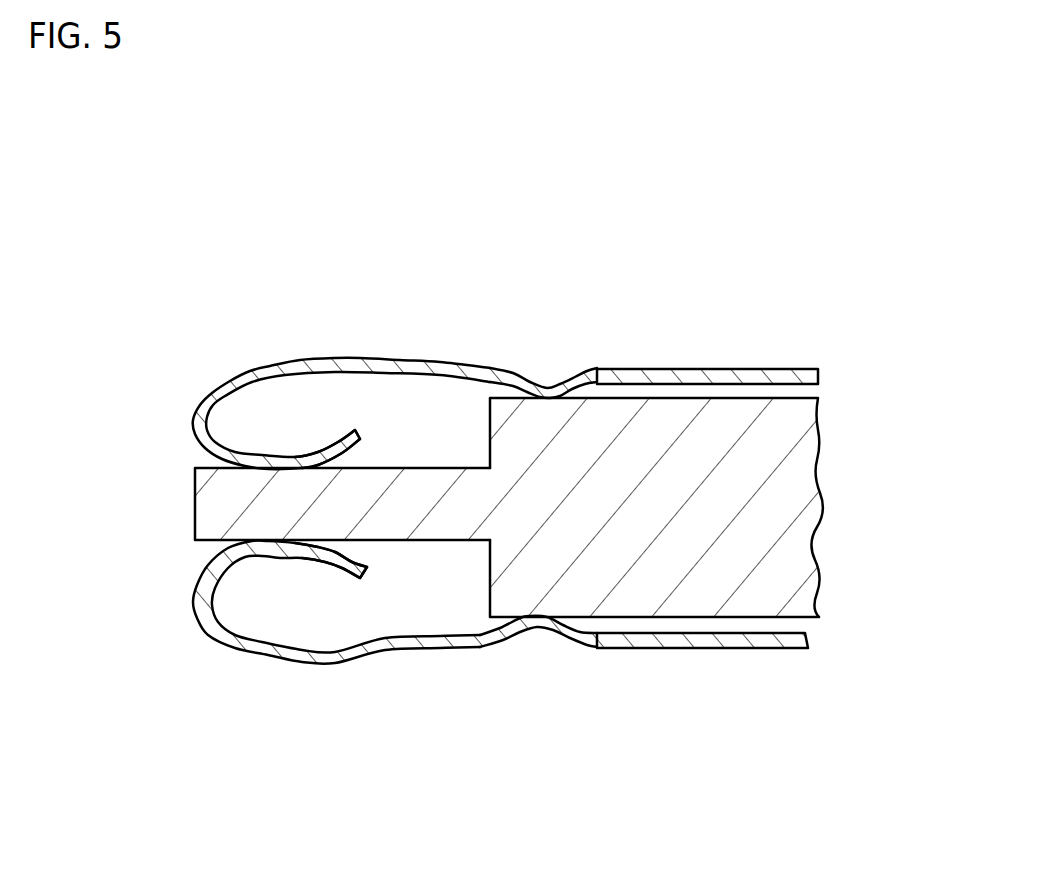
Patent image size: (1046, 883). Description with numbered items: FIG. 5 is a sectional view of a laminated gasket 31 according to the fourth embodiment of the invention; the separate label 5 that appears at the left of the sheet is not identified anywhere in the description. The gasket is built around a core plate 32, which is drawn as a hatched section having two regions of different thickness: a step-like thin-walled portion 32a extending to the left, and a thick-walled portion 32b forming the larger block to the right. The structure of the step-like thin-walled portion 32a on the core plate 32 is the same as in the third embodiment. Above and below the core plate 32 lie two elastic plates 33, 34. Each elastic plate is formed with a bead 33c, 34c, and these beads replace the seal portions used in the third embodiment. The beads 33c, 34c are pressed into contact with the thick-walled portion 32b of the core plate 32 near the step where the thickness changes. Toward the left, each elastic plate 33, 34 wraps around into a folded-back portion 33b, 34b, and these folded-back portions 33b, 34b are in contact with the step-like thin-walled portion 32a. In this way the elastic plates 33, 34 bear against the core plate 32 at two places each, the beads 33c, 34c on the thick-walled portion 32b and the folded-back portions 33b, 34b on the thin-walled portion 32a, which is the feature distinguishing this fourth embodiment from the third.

The terminal fitting 5 is at (141, 522).
The laminated gasket 31 is at (634, 346).
The core plate 32 is at (692, 568).
The step-like thin-walled portion 32a is at (387, 487).
The thick-walled portion 32b is at (710, 580).
The elastic plate 33 is at (328, 358).
The folded-back portion 33b is at (253, 450).
The bead 33c is at (552, 385).
The elastic plate 34 is at (353, 663).
The folded-back portion 34b is at (277, 558).
The bead 34c is at (540, 628).